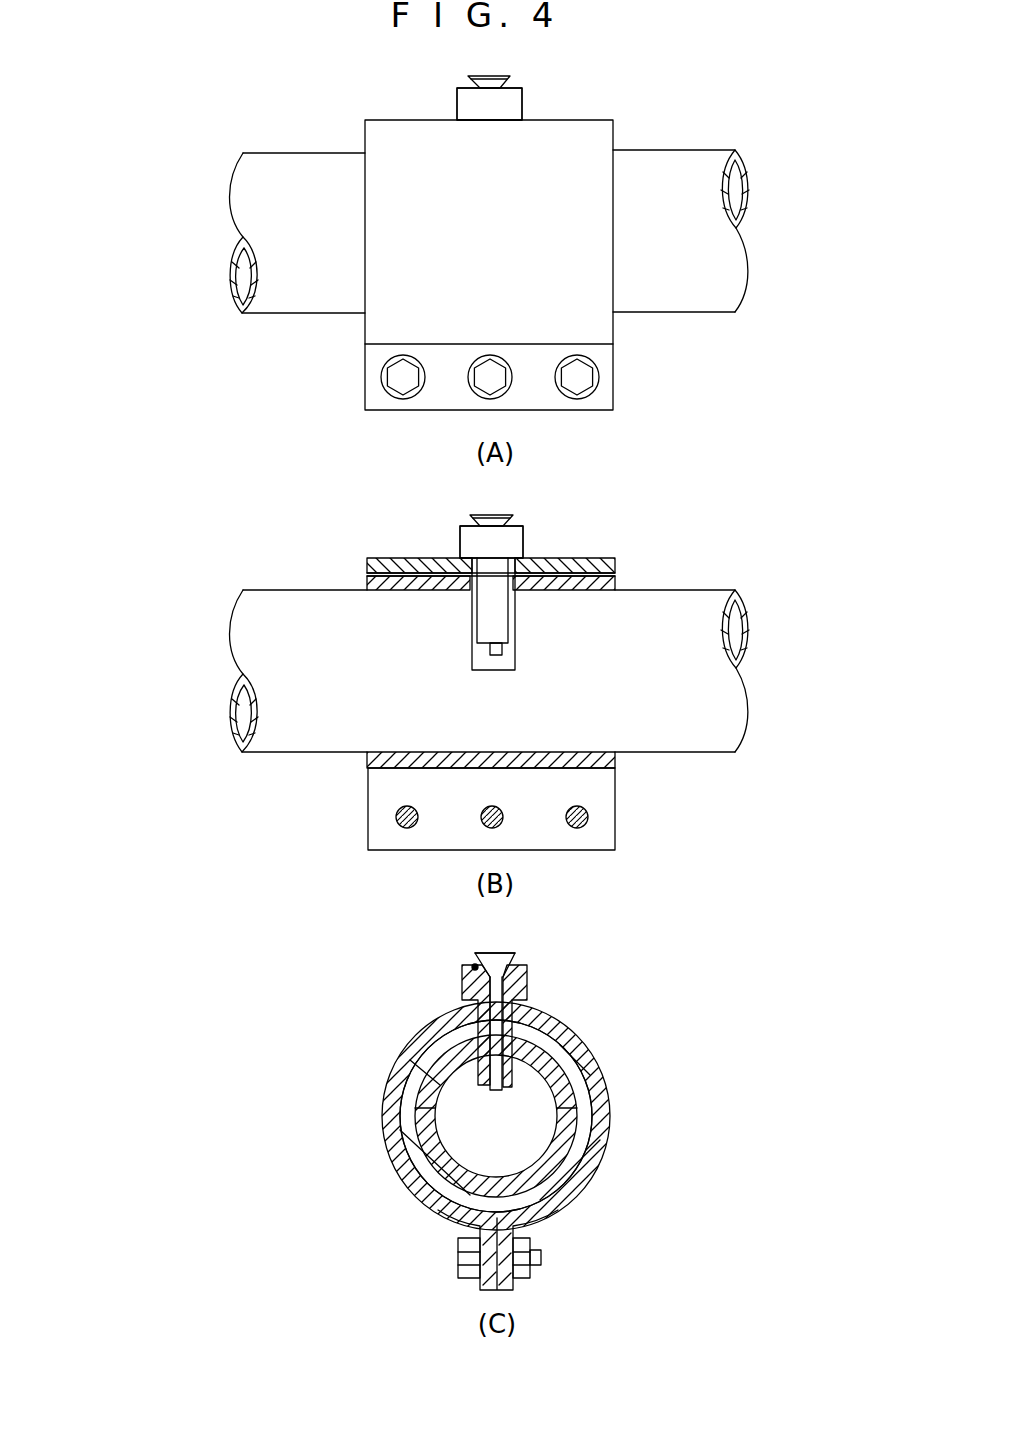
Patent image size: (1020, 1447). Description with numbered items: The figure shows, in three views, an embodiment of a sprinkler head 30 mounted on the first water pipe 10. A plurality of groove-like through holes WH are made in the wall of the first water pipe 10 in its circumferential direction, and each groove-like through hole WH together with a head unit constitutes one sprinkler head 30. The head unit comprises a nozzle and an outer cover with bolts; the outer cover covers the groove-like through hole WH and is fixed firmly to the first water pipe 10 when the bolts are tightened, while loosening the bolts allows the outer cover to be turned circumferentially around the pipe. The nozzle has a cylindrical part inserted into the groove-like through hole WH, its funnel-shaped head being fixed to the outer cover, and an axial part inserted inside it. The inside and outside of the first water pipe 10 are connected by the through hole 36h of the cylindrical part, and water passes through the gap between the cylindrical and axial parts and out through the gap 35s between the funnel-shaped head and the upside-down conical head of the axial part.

The sprinkler head 30 is at (318, 75).
The through hole 36h is at (507, 1072).
The gap 35s is at (473, 966).
The groove-like through hole WH is at (494, 670).
The first water pipe 10 is at (548, 1210).